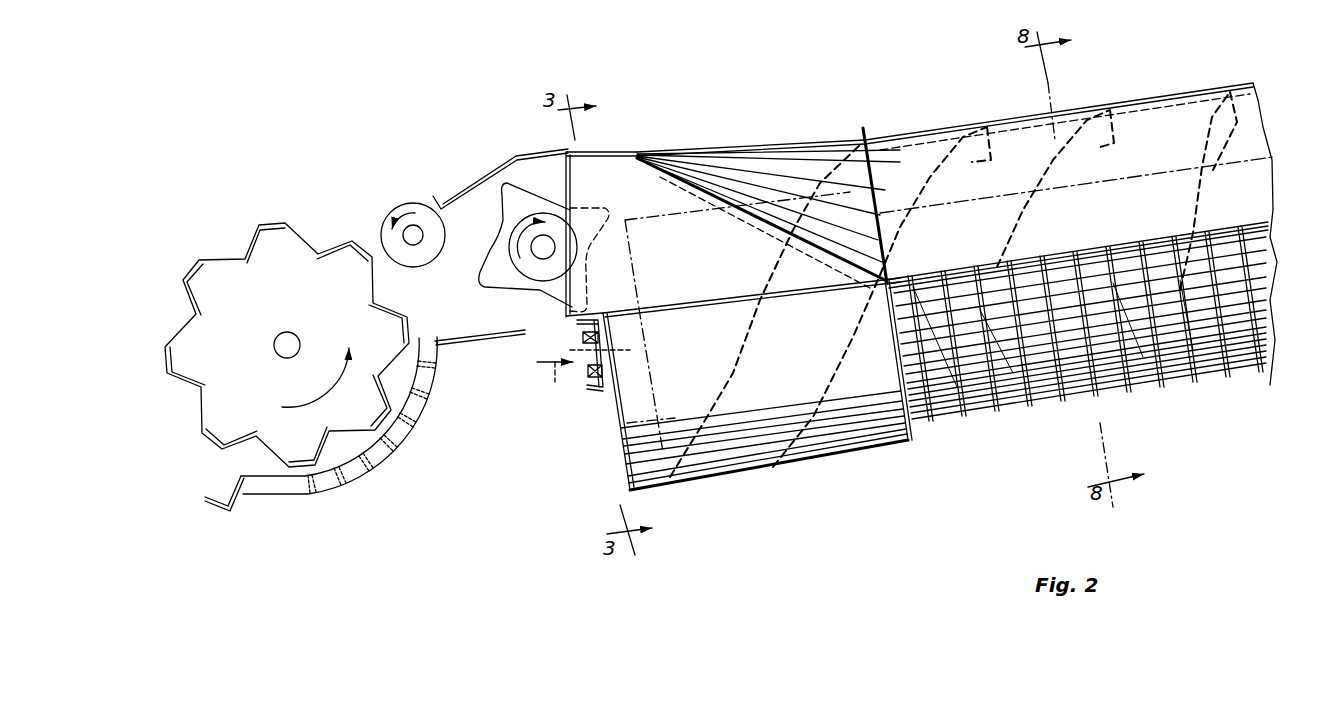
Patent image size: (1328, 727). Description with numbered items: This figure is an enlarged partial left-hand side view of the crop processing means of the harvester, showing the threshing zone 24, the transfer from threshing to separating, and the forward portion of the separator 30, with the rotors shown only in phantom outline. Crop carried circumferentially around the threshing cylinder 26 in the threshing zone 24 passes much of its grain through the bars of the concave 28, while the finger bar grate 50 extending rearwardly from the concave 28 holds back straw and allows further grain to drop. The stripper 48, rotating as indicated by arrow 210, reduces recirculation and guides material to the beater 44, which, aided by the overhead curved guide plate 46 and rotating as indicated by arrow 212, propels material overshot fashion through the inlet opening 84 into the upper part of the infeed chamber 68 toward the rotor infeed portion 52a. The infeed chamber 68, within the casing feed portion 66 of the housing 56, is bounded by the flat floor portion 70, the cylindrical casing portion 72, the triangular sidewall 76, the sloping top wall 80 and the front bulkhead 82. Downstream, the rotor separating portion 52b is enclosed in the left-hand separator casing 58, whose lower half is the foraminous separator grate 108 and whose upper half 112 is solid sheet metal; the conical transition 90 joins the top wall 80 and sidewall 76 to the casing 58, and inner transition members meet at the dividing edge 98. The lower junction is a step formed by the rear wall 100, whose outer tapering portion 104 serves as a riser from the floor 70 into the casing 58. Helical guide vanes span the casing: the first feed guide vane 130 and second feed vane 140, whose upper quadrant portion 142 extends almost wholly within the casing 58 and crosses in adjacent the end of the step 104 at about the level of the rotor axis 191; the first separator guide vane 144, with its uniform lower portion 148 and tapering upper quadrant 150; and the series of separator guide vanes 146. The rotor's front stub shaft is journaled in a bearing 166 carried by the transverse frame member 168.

The threshing zone 24 is at (248, 457).
The threshing cylinder 26 is at (246, 256).
The concave 28 is at (363, 483).
The separator 30 is at (777, 53).
The beater 44 is at (498, 290).
The guide plate 46 is at (522, 158).
The stripper 48 is at (405, 203).
The finger bar grate 50 is at (488, 344).
The rotor infeed portion 52a is at (635, 443).
The rotor separating portion 52b is at (1258, 160).
The housing or casing 56 is at (863, 83).
The left-hand separator casing 58 is at (997, 117).
The casing feed portion 66 is at (742, 132).
The infeed chamber 68 is at (642, 196).
The floor portion 70 is at (690, 480).
The left-hand cylindrical casing portion 72 is at (764, 427).
The left-hand sidewall 76 is at (676, 276).
The top wall 80 is at (598, 151).
The front wall or bulkhead 82 is at (628, 476).
The inlet opening 84 is at (566, 187).
The left-hand upper outer transition 90 is at (780, 178).
The dividing edge 98 is at (745, 240).
The rear wall 100 is at (924, 441).
The left-hand outer tapering portion 104 is at (906, 442).
The left-hand separator grate 108 is at (1188, 388).
The left-hand casing upper half 112 is at (1172, 93).
The first feed guide vane 130 is at (698, 398).
The second feed vane 140 is at (830, 348).
The upper quadrant portion 142 is at (928, 212).
The first separator guide vane 144 is at (1048, 212).
The separator guide vanes 146 is at (1225, 185).
The lower portion 148 is at (993, 362).
The upper quadrant 150 is at (1097, 148).
The bearing 166 is at (593, 378).
The transverse frame member 168 is at (602, 393).
The rotor axis 191 is at (575, 373).
The arrow 210 is at (395, 225).
The arrow 212 is at (509, 244).